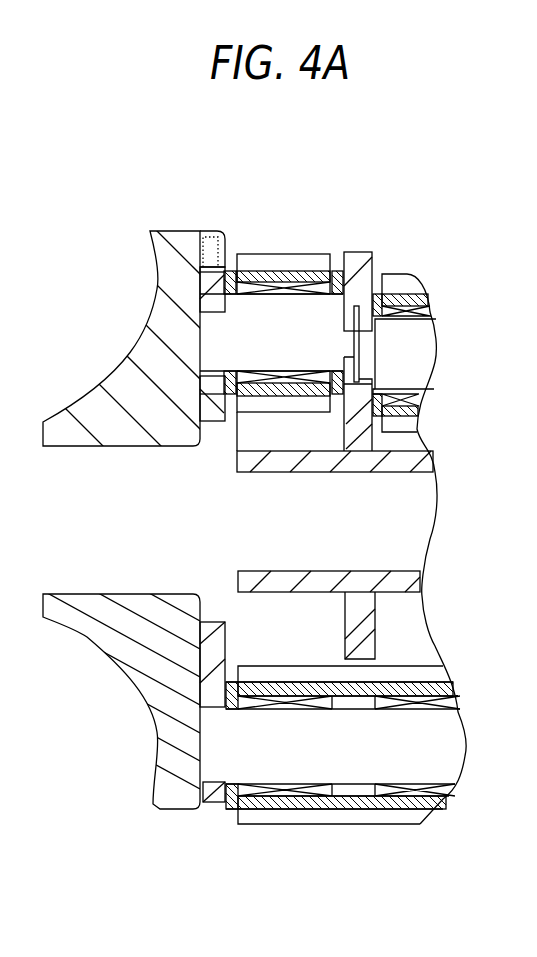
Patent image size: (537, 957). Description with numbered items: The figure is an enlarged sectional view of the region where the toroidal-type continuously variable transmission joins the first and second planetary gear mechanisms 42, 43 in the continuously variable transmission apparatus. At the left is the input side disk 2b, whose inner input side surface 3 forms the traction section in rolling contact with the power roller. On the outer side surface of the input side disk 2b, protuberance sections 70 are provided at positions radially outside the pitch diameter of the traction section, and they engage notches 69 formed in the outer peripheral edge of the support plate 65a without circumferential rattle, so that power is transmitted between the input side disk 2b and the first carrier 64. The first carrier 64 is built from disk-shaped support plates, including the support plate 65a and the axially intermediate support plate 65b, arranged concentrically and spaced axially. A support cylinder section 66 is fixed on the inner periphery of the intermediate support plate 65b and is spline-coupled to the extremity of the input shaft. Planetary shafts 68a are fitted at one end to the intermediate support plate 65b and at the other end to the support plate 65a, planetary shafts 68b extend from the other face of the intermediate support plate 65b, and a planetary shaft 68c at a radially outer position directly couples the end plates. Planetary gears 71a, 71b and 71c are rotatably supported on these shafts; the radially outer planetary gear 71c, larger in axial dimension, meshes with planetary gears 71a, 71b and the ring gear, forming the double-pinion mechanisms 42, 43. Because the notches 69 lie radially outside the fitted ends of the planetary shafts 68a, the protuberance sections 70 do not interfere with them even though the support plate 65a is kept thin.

The input side disk 2b is at (150, 270).
The input side surface 3 is at (145, 343).
The notches 69 is at (207, 266).
The protuberance sections 70 is at (218, 247).
The first carrier 64 is at (362, 250).
The second planetary gear mechanism 43 is at (439, 288).
The planetary shaft 68b is at (424, 350).
The planetary gear 71b is at (407, 427).
The intermediate support plate 65b is at (357, 428).
The support plate 65a is at (212, 413).
The planetary shaft 68a is at (267, 338).
The planetary gear 71a is at (320, 407).
The support cylinder section 66 is at (313, 578).
The planetary shaft 68c is at (453, 750).
The planetary gear 71c is at (303, 817).
The first planetary gear mechanism 42 is at (247, 840).